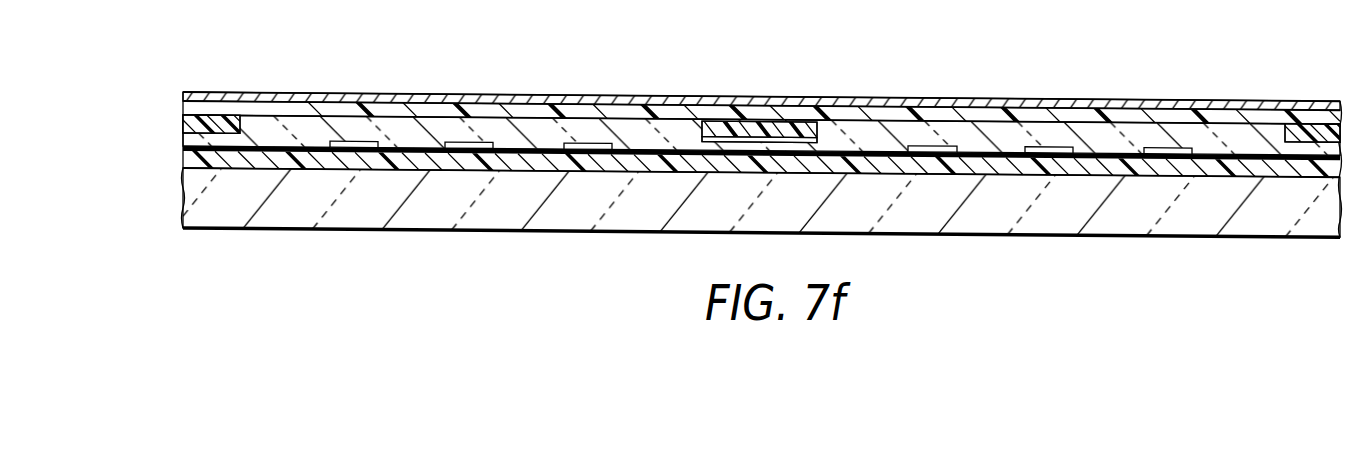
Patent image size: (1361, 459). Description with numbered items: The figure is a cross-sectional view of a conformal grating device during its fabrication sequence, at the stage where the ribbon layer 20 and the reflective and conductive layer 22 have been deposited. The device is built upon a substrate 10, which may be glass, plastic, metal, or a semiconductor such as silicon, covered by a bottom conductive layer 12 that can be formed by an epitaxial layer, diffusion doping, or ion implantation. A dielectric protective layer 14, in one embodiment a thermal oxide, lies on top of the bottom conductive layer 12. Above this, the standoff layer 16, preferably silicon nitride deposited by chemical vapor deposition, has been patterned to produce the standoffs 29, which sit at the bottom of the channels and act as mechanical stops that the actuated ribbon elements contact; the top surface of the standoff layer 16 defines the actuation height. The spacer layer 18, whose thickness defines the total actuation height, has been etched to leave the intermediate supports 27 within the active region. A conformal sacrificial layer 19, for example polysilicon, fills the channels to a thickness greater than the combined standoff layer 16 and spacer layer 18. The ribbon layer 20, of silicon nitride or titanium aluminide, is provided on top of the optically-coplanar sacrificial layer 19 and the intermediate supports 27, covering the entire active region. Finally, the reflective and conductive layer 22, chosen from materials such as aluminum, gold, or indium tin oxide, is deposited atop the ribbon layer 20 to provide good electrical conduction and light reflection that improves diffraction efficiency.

The substrate 10 is at (192, 228).
The bottom conductive layer 12 is at (182, 166).
The dielectric protective layer 14 is at (182, 159).
The standoff layer 16 is at (183, 152).
The spacer layer 18 is at (183, 127).
The sacrificial layer 19 is at (303, 122).
The ribbon layer 20 is at (183, 108).
The reflective and conductive layer 22 is at (195, 92).
The intermediate supports 27 is at (795, 131).
The standoffs 29 is at (352, 147).